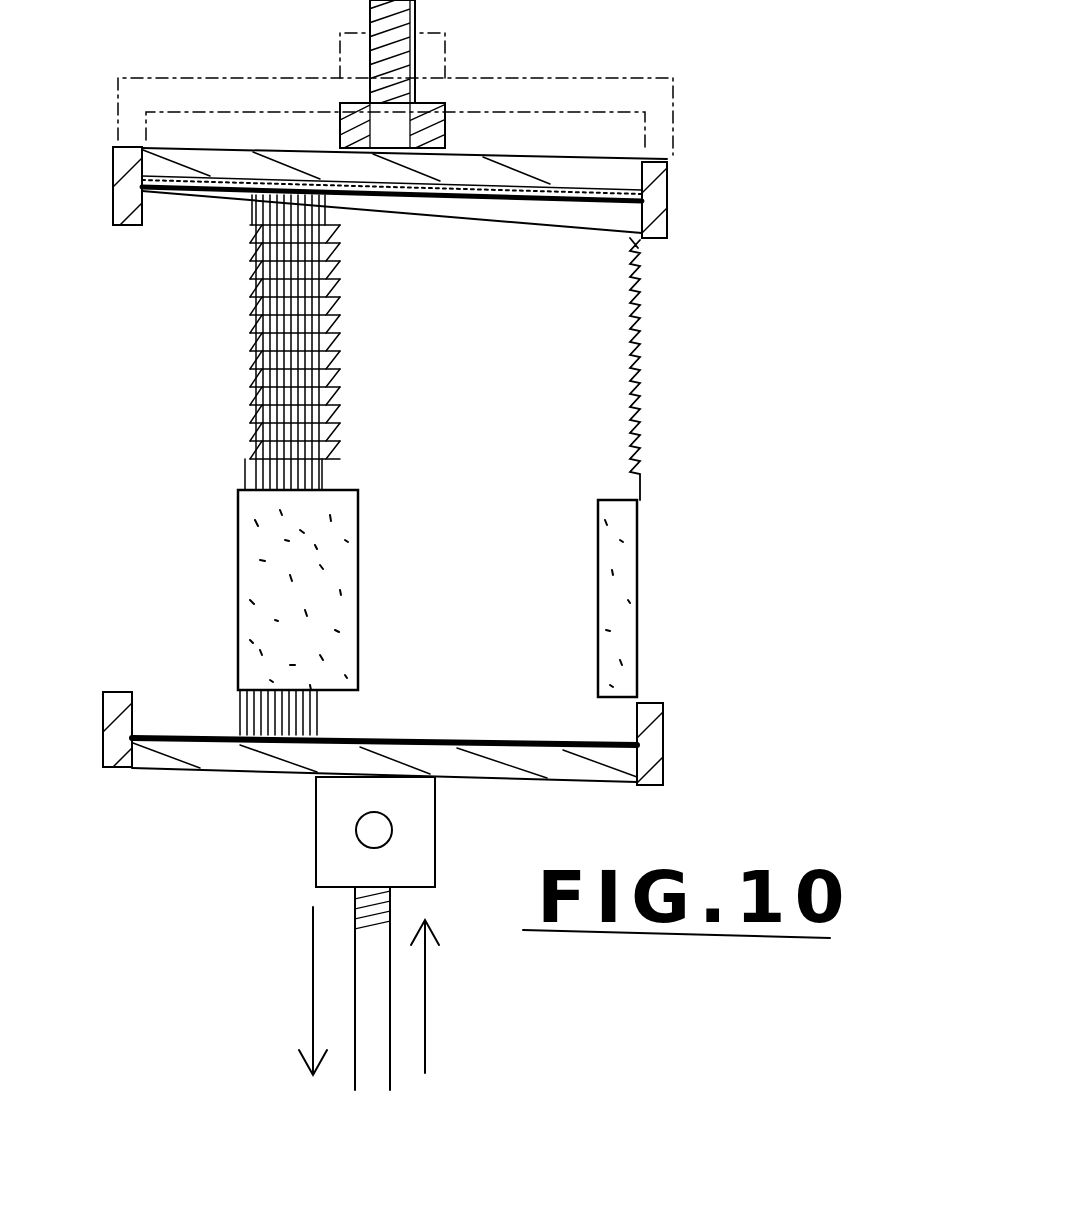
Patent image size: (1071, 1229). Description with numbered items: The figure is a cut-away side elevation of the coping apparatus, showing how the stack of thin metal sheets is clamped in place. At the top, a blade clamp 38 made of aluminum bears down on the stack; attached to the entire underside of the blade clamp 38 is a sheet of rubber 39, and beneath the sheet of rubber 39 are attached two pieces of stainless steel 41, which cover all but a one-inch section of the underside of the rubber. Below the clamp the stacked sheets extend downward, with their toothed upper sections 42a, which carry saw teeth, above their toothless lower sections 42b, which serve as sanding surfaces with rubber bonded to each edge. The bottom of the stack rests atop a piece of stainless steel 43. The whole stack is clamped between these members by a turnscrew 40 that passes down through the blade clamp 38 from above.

The turnscrew 40 is at (393, 65).
The blade clamp 38 is at (590, 172).
The sheet of rubber 39 is at (622, 198).
The pieces of stainless steel 41 is at (592, 212).
The upper sections of sheets 42a is at (602, 360).
The lower sections of sheets 42b is at (617, 587).
The stainless steel 43 is at (592, 741).